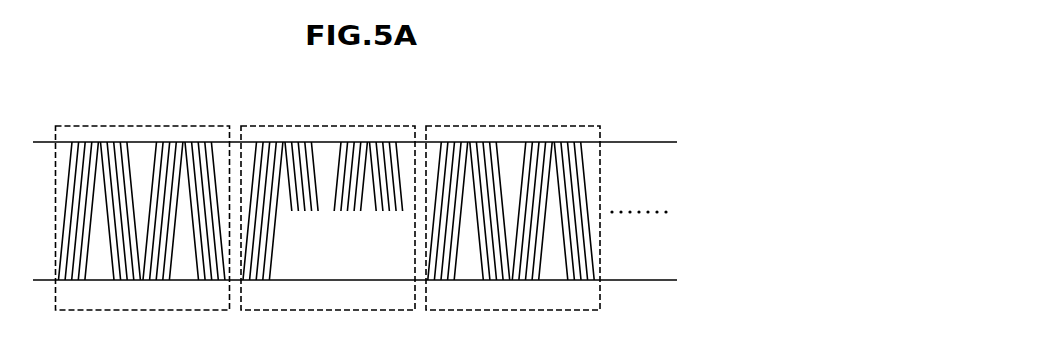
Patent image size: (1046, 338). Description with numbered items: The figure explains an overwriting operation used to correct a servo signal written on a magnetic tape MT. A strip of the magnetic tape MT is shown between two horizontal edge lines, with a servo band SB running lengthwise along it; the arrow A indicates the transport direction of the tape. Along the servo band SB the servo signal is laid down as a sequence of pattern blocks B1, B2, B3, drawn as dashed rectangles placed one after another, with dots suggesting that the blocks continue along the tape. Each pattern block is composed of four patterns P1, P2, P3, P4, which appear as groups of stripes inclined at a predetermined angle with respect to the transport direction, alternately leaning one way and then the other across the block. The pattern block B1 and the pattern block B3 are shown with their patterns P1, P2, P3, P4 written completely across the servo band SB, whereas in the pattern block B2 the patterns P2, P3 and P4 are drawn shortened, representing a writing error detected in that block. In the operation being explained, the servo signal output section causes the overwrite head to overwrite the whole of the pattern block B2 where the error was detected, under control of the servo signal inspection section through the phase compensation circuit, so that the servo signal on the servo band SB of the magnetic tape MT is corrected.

The magnetic tape MT is at (570, 123).
The servo band SB is at (631, 167).
The pattern block B1 is at (136, 123).
The pattern block B2 is at (358, 123).
The pattern block B3 is at (490, 123).
The arrow indicating transport direction A is at (274, 88).
The pattern P1 is at (263, 224).
The pattern P2 is at (305, 224).
The pattern P3 is at (347, 224).
The pattern P4 is at (389, 224).